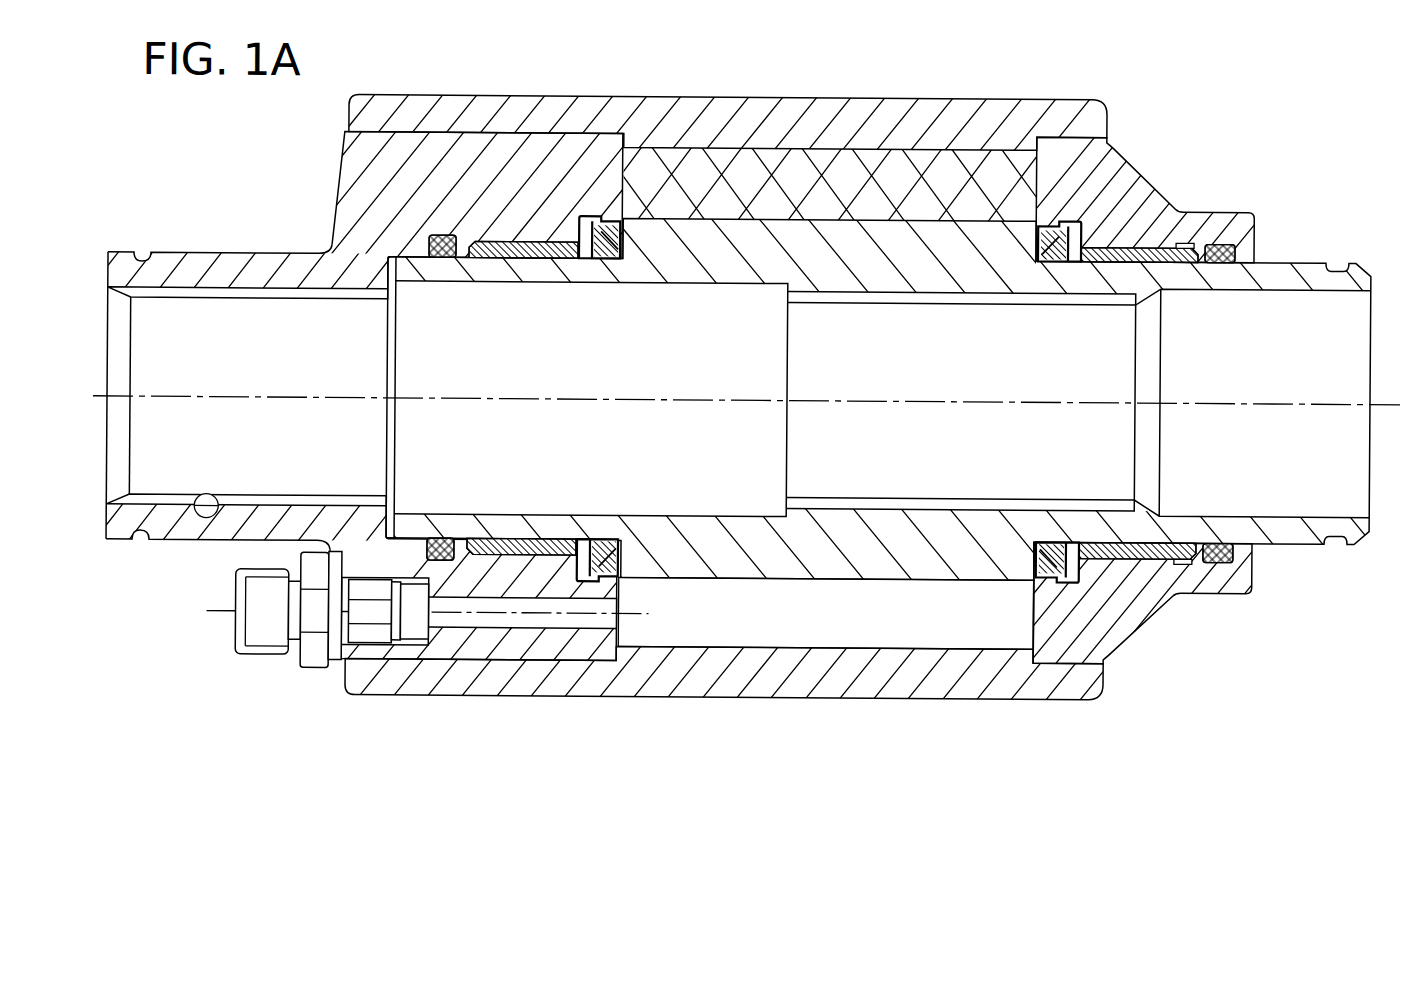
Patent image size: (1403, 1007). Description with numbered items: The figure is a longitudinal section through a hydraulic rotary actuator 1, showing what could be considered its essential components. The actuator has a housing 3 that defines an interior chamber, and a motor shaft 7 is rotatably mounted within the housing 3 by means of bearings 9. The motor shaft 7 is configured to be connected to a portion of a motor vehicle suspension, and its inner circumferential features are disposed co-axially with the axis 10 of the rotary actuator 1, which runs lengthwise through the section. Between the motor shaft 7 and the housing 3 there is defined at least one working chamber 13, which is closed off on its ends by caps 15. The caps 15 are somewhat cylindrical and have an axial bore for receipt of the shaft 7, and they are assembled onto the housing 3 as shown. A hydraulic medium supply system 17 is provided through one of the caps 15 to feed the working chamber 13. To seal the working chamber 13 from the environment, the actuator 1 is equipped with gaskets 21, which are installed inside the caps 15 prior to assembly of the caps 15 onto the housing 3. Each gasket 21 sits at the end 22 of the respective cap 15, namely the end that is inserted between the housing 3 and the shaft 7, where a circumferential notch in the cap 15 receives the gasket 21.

The hydraulic rotary actuator 1 is at (662, 753).
The housing 3 is at (820, 689).
The motor shaft 7 is at (1278, 526).
The bearings 9 is at (483, 550).
The axis 10 is at (106, 399).
The working chamber 13 is at (921, 628).
The caps 15 is at (385, 160).
The hydraulic medium supply system 17 is at (257, 625).
The gaskets 21 is at (563, 579).
The end of the caps 22 is at (1032, 615).